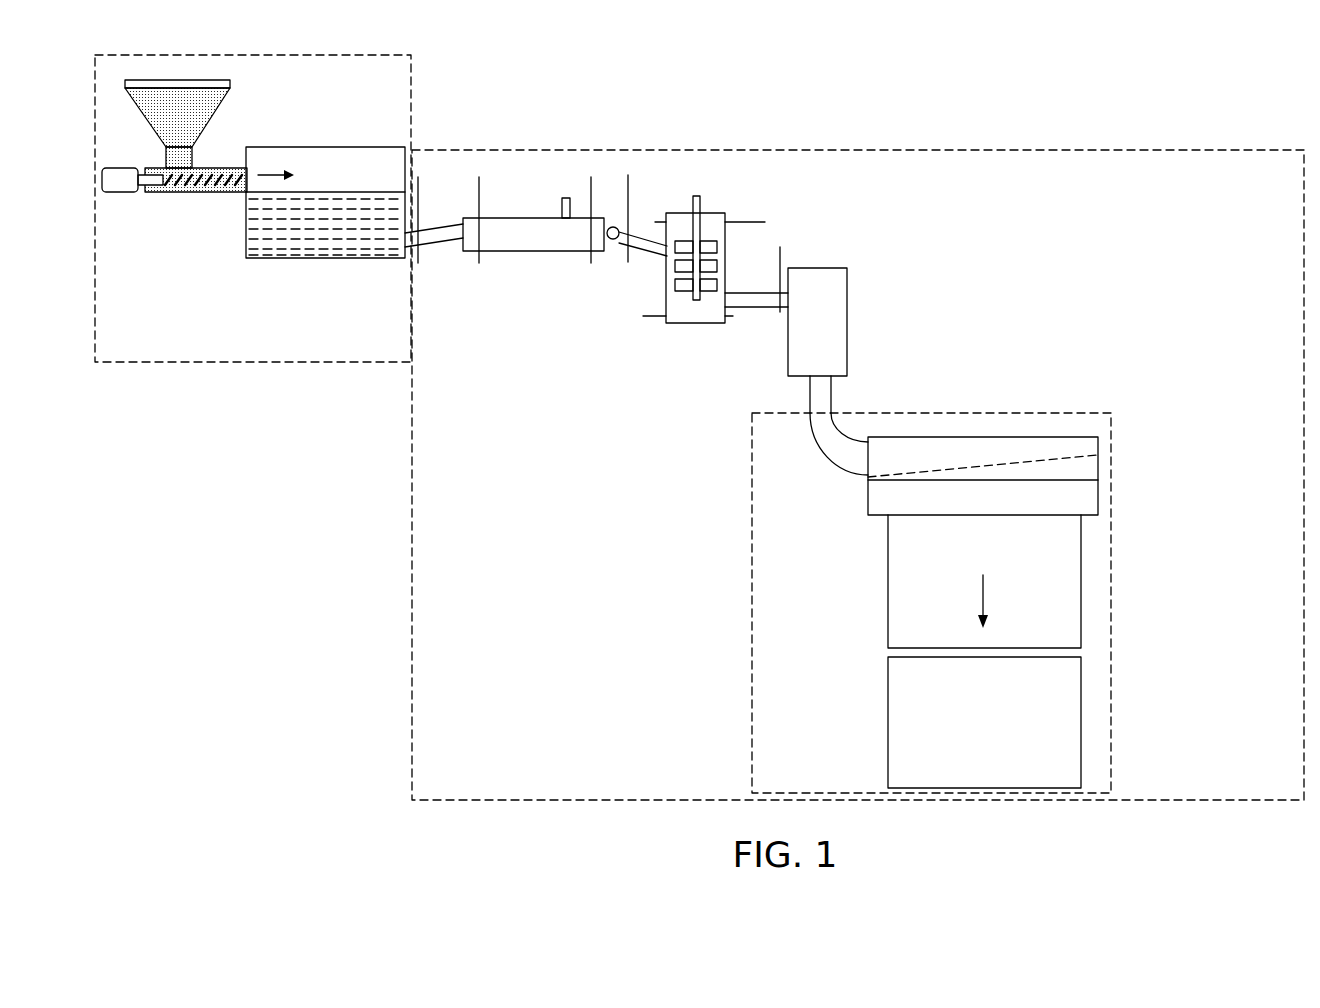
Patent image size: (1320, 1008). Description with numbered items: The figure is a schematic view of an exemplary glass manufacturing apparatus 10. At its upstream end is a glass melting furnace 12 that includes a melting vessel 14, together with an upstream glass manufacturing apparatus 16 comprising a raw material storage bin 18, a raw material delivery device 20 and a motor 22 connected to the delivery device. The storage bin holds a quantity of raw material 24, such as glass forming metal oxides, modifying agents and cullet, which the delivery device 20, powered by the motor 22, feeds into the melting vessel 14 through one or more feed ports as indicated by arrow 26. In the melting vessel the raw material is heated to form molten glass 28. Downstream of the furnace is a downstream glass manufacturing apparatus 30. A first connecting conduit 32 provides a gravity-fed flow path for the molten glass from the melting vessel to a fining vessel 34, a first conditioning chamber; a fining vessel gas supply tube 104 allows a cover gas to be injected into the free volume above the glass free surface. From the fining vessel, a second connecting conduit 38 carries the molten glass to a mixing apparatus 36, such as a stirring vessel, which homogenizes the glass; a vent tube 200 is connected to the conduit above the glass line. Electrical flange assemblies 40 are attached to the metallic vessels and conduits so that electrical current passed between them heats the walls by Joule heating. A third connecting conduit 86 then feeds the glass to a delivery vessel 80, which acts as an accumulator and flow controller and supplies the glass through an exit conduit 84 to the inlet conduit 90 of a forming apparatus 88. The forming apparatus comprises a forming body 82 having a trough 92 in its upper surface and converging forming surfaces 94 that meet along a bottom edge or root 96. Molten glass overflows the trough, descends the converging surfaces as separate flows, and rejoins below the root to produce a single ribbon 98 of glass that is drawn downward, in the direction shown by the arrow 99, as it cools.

The glass manufacturing apparatus 10 is at (330, 429).
The glass melting furnace 12 is at (258, 362).
The melting vessel 14 is at (324, 213).
The upstream glass manufacturing apparatus 16 is at (146, 219).
The raw material storage bin 18 is at (204, 121).
The raw material delivery device 20 is at (217, 193).
The motor 22 is at (117, 168).
The raw material 24 is at (185, 118).
The arrow 26 is at (272, 168).
The molten glass 28 is at (272, 245).
The downstream glass manufacturing apparatus 30 is at (800, 148).
The first connecting conduit 32 is at (442, 248).
The fining vessel 34 is at (533, 237).
The mixing apparatus 36 is at (682, 323).
The second connecting conduit 38 is at (617, 242).
The electrical flange assemblies 40 is at (420, 193).
The delivery vessel 80 is at (788, 352).
The forming body 82 is at (974, 449).
The exit conduit 84 is at (832, 393).
The third connecting conduit 86 is at (753, 307).
The forming apparatus 88 is at (993, 413).
The inlet conduit 90 is at (828, 460).
The trough 92 is at (1033, 460).
The converging forming surfaces 94 is at (868, 490).
The root 96 is at (1063, 518).
The ribbon 98 is at (943, 581).
The flow direction 99 is at (983, 608).
The fining vessel gas supply tube 104 is at (560, 207).
The vent tube 200 is at (615, 241).